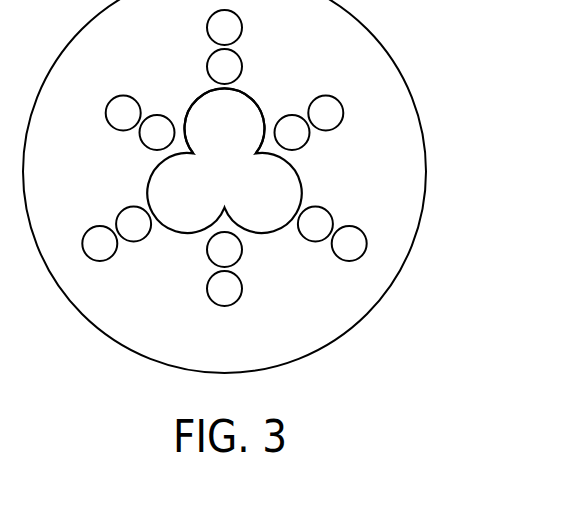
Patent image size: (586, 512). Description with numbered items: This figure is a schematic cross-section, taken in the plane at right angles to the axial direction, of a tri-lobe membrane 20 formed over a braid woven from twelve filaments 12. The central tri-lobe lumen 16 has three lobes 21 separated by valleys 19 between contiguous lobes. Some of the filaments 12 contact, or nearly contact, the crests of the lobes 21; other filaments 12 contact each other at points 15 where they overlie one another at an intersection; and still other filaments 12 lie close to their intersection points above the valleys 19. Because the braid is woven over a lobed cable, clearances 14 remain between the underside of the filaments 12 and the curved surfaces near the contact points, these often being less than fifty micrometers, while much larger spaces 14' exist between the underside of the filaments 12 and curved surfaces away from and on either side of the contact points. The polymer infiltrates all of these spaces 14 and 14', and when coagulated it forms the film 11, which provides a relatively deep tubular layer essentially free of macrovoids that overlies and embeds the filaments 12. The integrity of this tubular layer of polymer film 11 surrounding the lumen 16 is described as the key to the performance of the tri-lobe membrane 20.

The polymer film 11 is at (428, 153).
The filaments 12 is at (328, 96).
The clearances 14 is at (318, 202).
The larger spaces 14' is at (284, 109).
The intersection points 15 is at (128, 243).
The lumen 16 is at (239, 184).
The valleys 19 is at (181, 154).
The membrane 20 is at (280, 186).
The lobes 21 is at (200, 94).